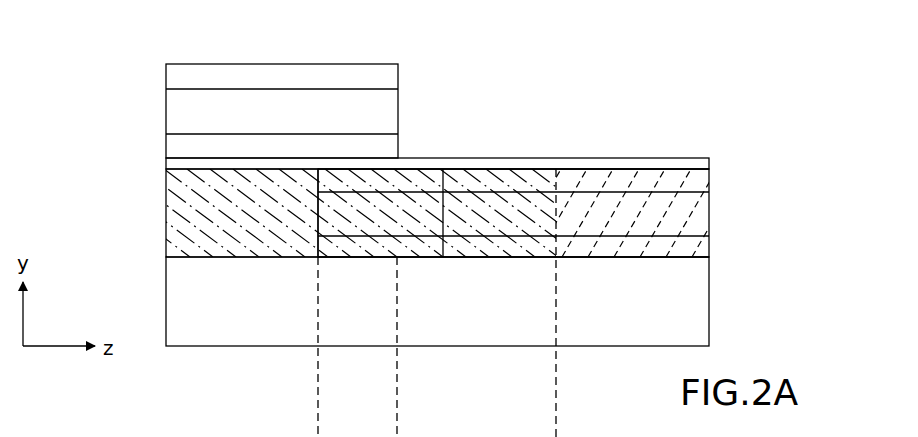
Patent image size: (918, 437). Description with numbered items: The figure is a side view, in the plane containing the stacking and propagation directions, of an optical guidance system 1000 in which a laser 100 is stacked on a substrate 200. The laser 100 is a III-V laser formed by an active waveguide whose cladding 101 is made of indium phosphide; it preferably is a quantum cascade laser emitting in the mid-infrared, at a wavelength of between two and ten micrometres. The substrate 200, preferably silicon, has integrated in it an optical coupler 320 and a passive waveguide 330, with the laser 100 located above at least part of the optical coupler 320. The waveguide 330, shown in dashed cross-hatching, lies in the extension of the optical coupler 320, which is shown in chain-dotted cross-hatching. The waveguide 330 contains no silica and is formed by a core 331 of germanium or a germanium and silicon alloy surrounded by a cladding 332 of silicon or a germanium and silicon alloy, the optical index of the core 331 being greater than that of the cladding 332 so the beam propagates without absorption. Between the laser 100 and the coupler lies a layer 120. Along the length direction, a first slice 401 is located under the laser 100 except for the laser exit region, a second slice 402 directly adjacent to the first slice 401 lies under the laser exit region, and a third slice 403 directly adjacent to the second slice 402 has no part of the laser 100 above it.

The optical guidance system 1000 is at (237, 45).
The laser 100 is at (113, 107).
The cladding 101 is at (175, 78).
The layer 120 is at (175, 163).
The optical coupler 320 is at (174, 203).
The waveguide 330 is at (796, 158).
The core 331 is at (700, 216).
The cladding 332 is at (700, 184).
The substrate 200 is at (174, 270).
The first slice 401 is at (233, 266).
The second slice 402 is at (357, 266).
The third slice 403 is at (477, 266).